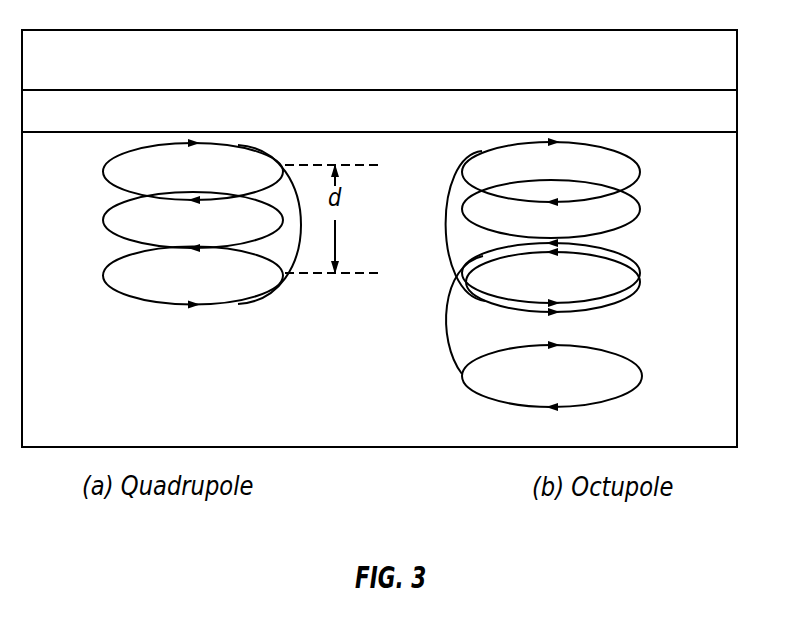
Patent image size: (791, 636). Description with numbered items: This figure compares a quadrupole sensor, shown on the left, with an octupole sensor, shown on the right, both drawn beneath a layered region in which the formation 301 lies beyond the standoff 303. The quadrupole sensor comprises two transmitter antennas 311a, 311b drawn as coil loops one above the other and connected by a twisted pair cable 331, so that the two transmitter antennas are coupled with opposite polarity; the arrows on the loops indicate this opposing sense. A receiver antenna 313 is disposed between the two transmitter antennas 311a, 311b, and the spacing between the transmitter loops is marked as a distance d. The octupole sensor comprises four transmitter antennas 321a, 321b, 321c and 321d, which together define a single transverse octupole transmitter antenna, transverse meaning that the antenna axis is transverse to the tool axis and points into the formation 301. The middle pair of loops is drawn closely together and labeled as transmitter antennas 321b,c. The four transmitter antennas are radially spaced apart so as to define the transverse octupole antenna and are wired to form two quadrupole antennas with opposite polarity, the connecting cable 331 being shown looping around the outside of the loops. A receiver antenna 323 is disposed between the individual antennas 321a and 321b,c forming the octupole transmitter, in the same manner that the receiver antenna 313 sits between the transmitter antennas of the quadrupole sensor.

The formation 301 is at (396, 72).
The standoff 303 is at (396, 122).
The transmitter antenna 311a is at (103, 173).
The receiver antenna 313 is at (103, 220).
The transmitter antenna 311b is at (103, 276).
The twisted pair cable 331 is at (445, 228).
The transmitter antenna 321a is at (640, 172).
The receiver antenna 323 is at (640, 210).
The transmitter antennas 321b,c is at (597, 277).
The transmitter antenna 321b is at (551, 273).
The transmitter antenna 321c is at (640, 274).
The transmitter antenna 321d is at (642, 376).